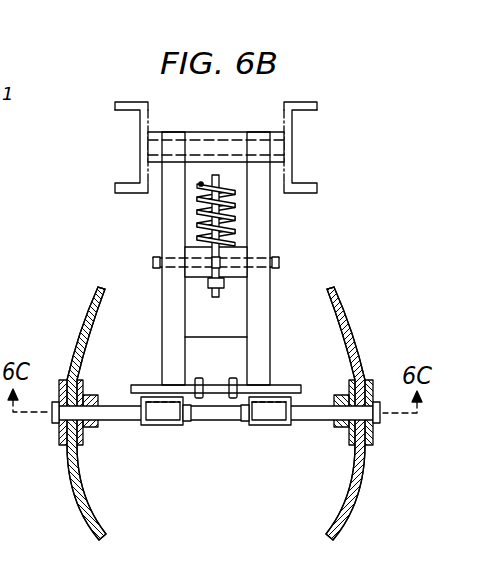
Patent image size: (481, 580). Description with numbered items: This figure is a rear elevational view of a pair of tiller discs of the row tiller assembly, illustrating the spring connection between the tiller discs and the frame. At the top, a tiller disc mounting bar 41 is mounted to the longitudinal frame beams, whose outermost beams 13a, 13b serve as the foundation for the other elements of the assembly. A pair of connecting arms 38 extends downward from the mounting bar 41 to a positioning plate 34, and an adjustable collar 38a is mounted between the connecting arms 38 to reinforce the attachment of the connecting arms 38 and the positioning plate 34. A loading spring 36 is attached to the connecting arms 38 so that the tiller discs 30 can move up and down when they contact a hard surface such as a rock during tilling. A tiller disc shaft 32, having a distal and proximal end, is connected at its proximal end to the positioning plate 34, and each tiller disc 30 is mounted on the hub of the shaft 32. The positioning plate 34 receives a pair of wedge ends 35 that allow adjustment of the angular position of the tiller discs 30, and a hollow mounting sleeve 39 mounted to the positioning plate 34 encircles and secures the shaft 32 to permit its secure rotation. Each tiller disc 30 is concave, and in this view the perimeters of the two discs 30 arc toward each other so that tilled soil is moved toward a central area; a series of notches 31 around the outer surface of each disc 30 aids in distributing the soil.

The outermost beam 13a is at (140, 157).
The outermost beam 13b is at (292, 157).
The tiller disc 30 is at (86, 319).
The notches 31 is at (102, 285).
The tiller disc shaft 32 is at (122, 415).
The positioning plate 34 is at (150, 386).
The wedge end 35 is at (135, 426).
The loading spring 36 is at (235, 212).
The connecting arm 38 is at (176, 240).
The adjustable collar 38a is at (221, 348).
The mounting sleeve 39 is at (172, 426).
The tiller disc mounting bar 41 is at (218, 136).